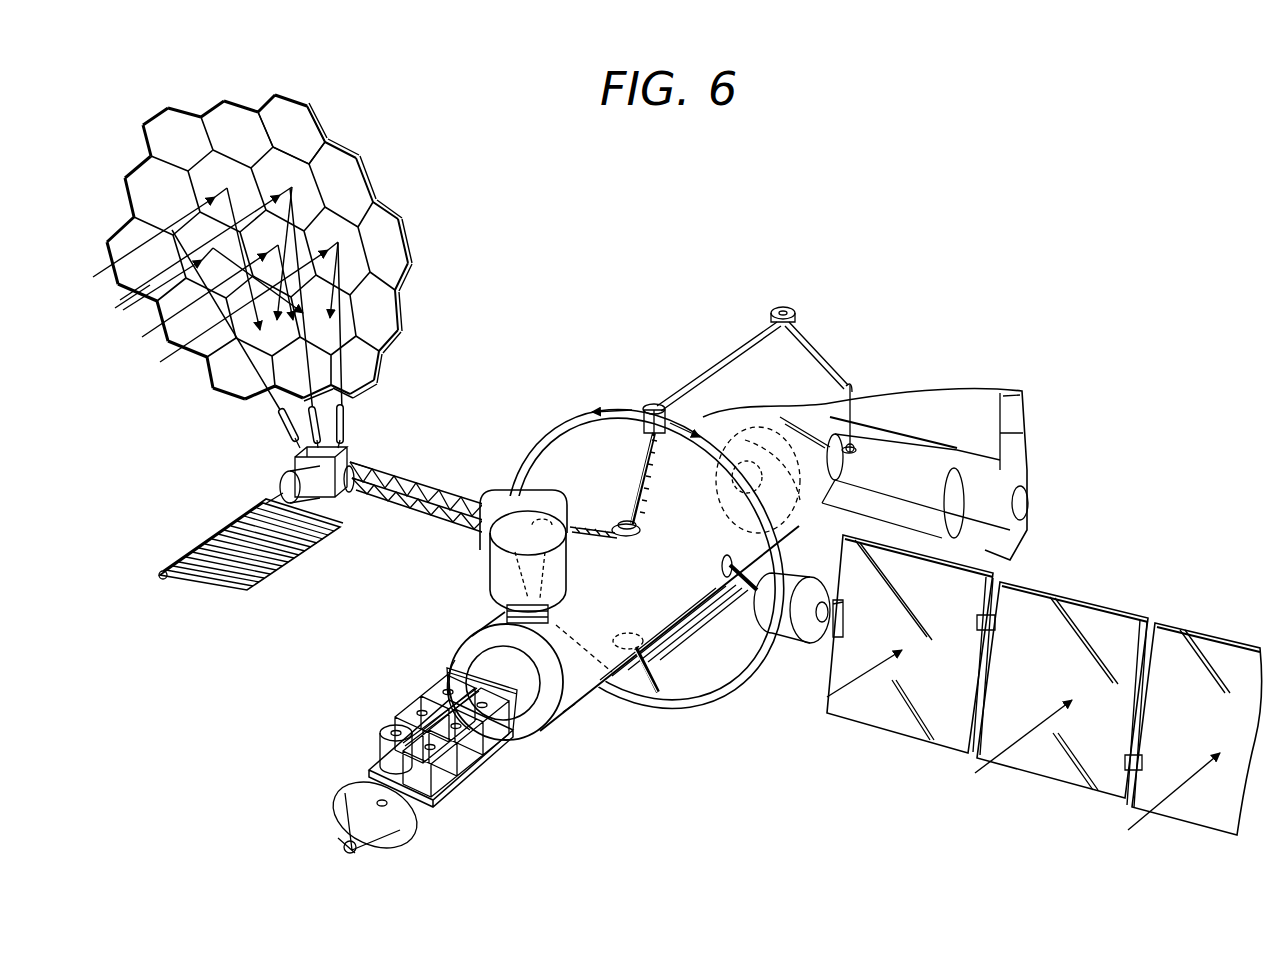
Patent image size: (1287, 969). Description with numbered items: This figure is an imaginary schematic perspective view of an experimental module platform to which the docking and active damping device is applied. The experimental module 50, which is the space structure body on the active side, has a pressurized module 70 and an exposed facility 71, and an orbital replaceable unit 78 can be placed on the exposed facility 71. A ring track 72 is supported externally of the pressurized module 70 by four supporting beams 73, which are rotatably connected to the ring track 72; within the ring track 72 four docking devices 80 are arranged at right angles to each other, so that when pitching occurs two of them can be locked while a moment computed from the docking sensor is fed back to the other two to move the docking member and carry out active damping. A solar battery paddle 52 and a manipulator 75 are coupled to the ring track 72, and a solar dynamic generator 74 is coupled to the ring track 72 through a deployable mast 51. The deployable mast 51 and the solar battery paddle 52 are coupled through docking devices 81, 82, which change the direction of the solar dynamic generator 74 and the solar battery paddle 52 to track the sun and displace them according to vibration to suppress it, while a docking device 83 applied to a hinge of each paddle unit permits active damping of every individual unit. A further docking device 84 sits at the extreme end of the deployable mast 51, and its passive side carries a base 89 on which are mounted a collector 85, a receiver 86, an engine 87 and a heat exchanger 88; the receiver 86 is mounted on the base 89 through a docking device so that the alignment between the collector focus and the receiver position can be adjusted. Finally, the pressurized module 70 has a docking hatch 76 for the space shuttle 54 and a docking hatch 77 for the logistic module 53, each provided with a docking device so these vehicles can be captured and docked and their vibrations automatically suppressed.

The experimental module 50 is at (573, 705).
The deployable mast 51 is at (448, 480).
The solar battery paddle 52 is at (1110, 618).
The logistic module 53 is at (498, 570).
The space shuttle 54 is at (970, 390).
The pressurized module 70 is at (588, 703).
The exposed facility 71 is at (480, 767).
The ring track 72 is at (567, 440).
The supporting beams 73 is at (582, 528).
The solar dynamic generator 74 is at (372, 180).
The manipulator 75 is at (723, 357).
The docking hatch 76 is at (808, 525).
The docking hatch 77 is at (505, 607).
The orbital replaceable unit 78 is at (447, 780).
The docking devices 80 is at (722, 560).
The docking device 81 is at (500, 503).
The docking device 82 is at (800, 643).
The docking device 83 is at (978, 622).
The docking device 84 is at (367, 467).
The collector 85 is at (303, 132).
The receiver 86 is at (297, 433).
The engine 87 is at (287, 472).
The heat exchanger 88 is at (223, 557).
The base 89 is at (337, 445).